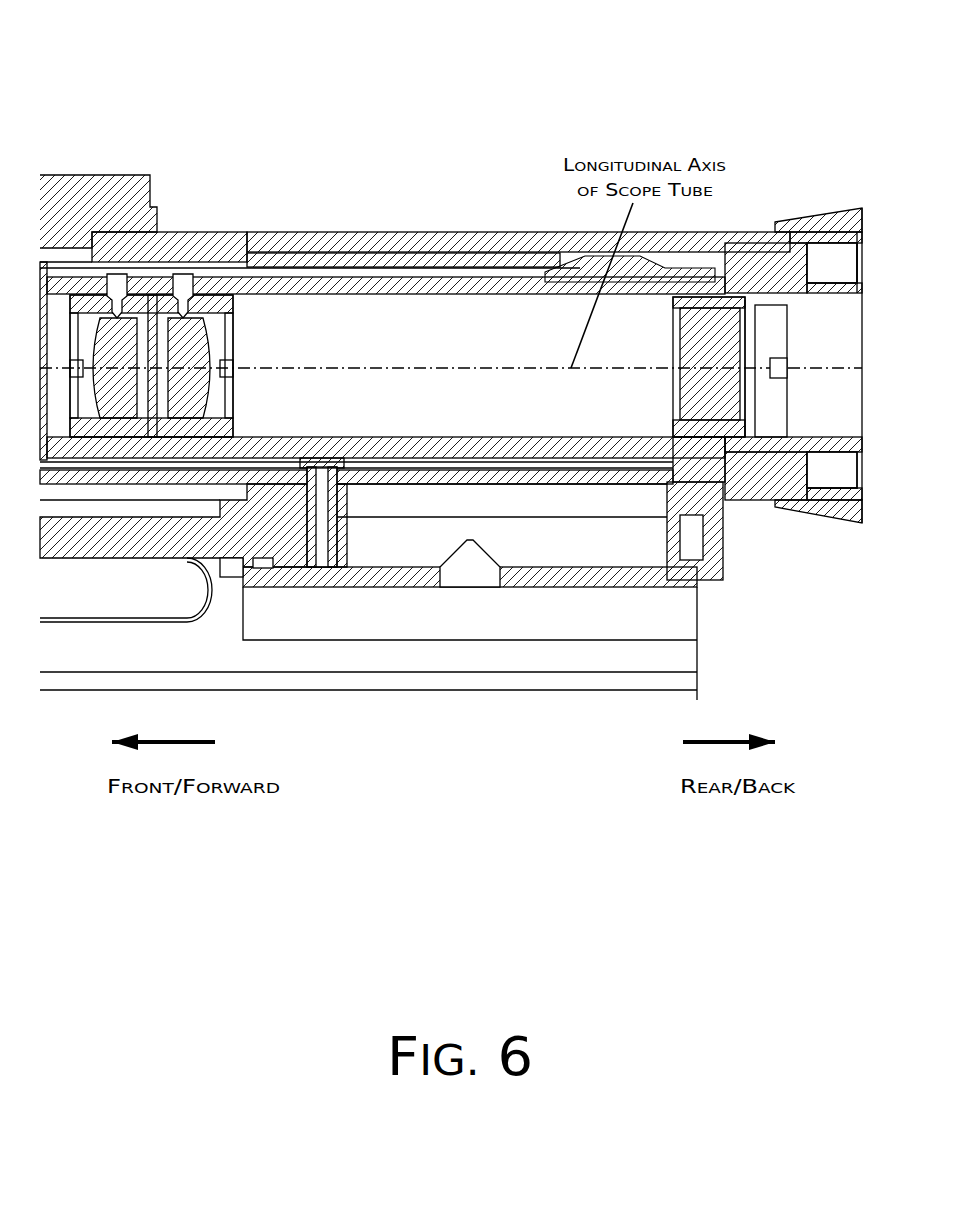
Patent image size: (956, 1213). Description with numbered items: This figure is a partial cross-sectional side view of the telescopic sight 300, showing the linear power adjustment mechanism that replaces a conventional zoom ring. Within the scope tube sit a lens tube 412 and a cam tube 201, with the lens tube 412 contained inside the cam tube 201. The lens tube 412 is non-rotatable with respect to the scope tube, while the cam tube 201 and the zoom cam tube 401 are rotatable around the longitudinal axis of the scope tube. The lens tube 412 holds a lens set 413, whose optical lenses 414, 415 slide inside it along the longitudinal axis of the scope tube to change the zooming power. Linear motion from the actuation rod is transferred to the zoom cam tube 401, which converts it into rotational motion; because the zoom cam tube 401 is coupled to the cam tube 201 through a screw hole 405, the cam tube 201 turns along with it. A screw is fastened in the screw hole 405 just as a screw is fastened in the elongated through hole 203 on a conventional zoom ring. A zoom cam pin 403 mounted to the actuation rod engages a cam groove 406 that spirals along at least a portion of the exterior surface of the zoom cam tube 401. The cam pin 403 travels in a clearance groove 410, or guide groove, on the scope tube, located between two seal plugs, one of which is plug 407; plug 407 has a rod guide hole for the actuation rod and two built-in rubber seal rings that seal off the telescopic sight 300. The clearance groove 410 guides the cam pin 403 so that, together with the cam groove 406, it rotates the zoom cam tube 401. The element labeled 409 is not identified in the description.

The telescopic sight 300 is at (301, 54).
The lens set 413 is at (340, 178).
The optical lens 414 is at (122, 338).
The optical lens 415 is at (188, 338).
The lens tube 412 is at (295, 438).
The clearance groove 410 is at (438, 500).
The zoom cam pin 403 is at (318, 474).
The cam groove 406 is at (356, 450).
The cam tube 201 is at (485, 450).
The zoom cam tube 401 is at (554, 468).
The elongated through hole 203 is at (704, 456).
The screw hole 405 is at (698, 468).
The seal plug 407 is at (220, 570).
The clamp tab 409 is at (243, 564).